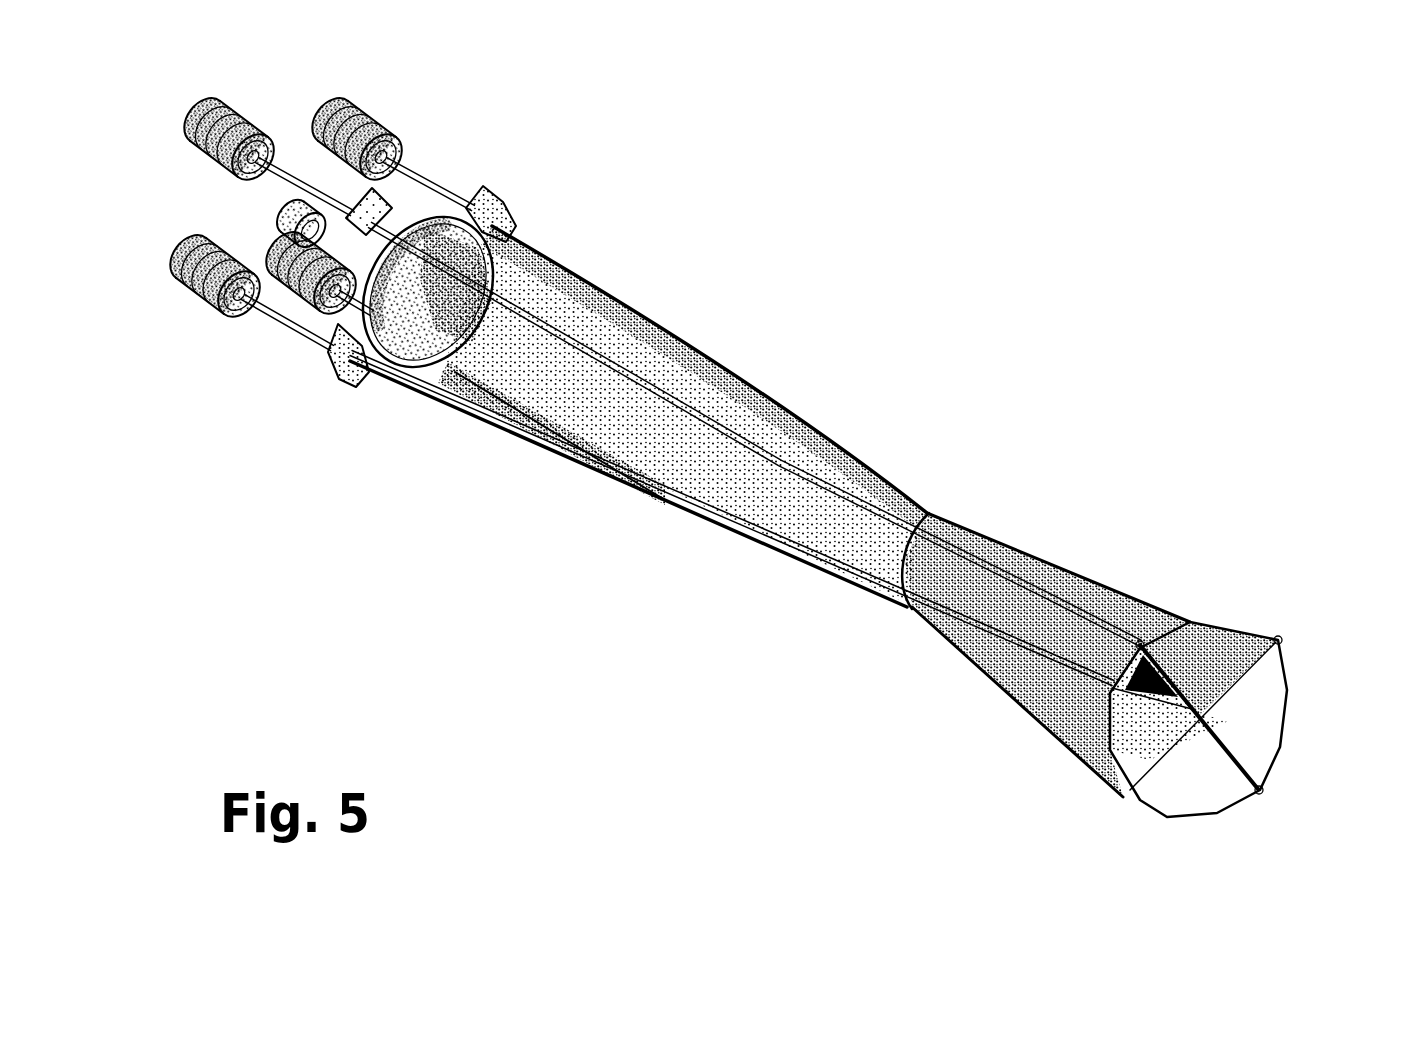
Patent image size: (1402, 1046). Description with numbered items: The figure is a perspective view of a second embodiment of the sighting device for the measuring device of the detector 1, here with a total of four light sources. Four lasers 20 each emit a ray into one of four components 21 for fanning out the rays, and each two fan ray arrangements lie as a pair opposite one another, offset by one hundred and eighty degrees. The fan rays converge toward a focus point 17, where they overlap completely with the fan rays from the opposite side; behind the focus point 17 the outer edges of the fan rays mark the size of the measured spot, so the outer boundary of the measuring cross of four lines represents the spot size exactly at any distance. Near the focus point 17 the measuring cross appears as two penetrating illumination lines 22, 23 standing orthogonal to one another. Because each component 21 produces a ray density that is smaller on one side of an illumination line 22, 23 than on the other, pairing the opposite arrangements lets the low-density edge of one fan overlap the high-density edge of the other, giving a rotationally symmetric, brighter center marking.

The detector 1 is at (300, 218).
The focus point 17 is at (933, 537).
The laser 20 is at (193, 138).
The component for the fanning out of the rays 21 is at (370, 203).
The illumination line 22 is at (1145, 803).
The illumination line 23 is at (1243, 762).